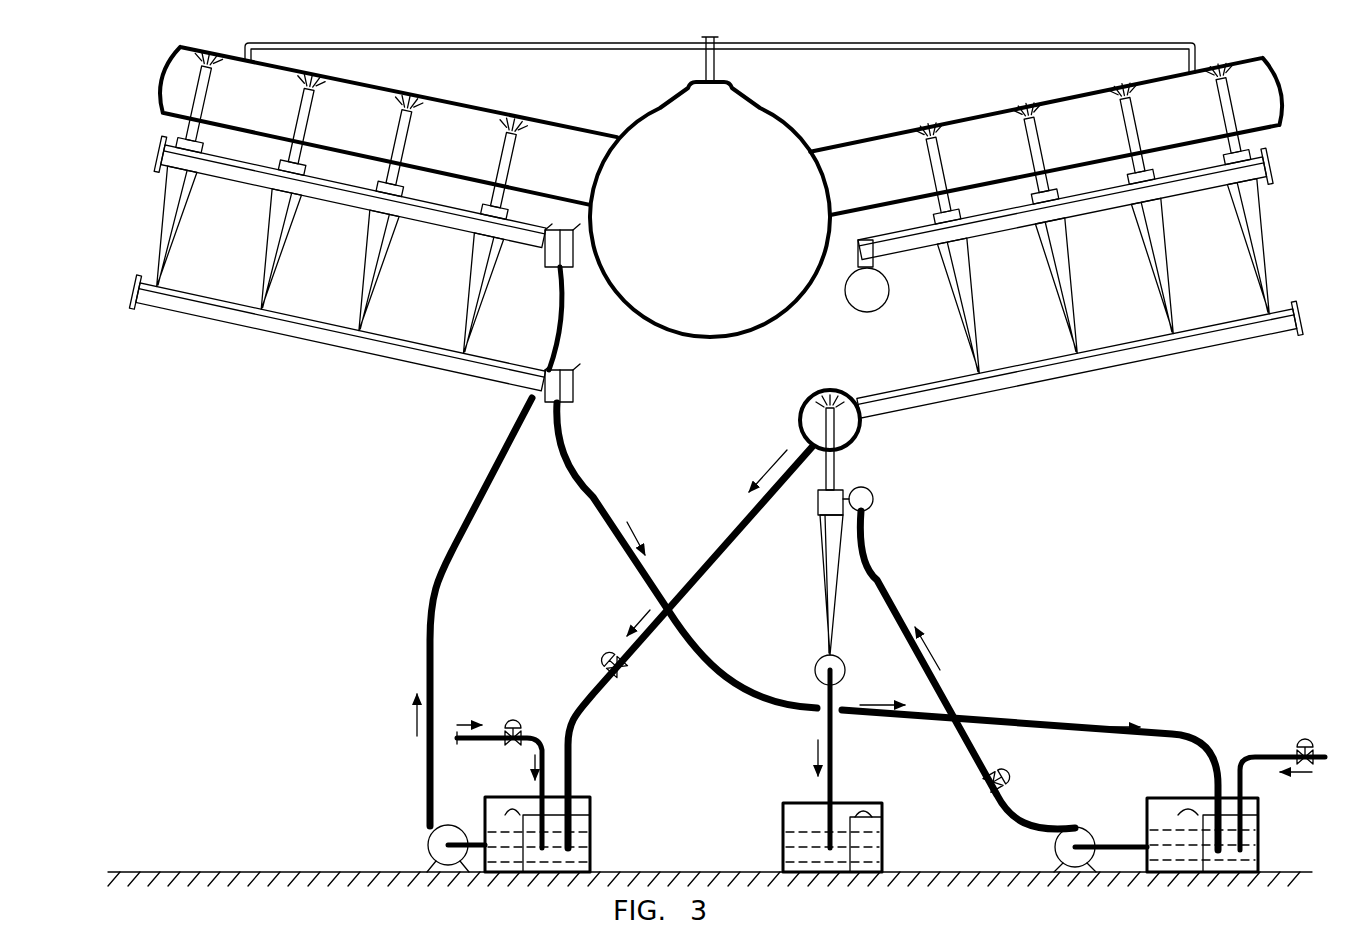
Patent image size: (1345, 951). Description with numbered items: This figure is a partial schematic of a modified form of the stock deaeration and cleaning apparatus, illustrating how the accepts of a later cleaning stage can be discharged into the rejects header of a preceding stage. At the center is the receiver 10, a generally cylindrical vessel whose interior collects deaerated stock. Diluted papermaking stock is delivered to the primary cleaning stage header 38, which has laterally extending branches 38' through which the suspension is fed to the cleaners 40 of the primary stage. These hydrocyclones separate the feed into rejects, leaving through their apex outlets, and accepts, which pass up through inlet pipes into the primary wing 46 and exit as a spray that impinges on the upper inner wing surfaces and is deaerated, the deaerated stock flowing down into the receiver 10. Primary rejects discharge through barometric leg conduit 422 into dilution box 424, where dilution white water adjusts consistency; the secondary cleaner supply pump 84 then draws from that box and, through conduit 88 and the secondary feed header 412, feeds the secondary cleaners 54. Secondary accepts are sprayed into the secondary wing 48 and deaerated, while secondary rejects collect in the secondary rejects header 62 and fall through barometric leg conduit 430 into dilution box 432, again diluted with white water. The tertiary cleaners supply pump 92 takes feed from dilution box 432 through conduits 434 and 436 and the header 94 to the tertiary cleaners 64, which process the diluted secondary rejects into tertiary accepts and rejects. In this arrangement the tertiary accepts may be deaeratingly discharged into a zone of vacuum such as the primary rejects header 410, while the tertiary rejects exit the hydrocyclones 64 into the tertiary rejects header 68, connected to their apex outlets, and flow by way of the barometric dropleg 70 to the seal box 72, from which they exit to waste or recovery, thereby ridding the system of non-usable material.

The receiver 10 is at (773, 117).
The secondary wing 48 is at (477, 108).
The primary wing 46 is at (904, 130).
The secondary feed header 412 is at (450, 233).
The secondary cleaners 54 is at (279, 258).
The secondary rejects header 62 is at (335, 346).
The laterally extending branches 38' is at (1064, 207).
The cleaners 40 is at (1074, 287).
The primary cleaning stage header 38 is at (876, 303).
The primary rejects header 410 is at (860, 433).
The header 94 is at (873, 499).
The tertiary cleaners 64 is at (821, 557).
The tertiary rejects header 68 is at (814, 668).
The barometric dropleg 70 is at (833, 762).
The seal box 72 is at (782, 838).
The secondary cleaner supply pump 84 is at (450, 826).
The conduit 88 is at (440, 567).
The tertiary cleaners supply pump 92 is at (1076, 827).
The barometric leg conduit 422 is at (730, 535).
The dilution box 424 is at (592, 823).
The barometric leg conduit 430 is at (610, 523).
The dilution box 432 is at (1187, 798).
The conduit 434 is at (1115, 843).
The conduit 436 is at (887, 592).